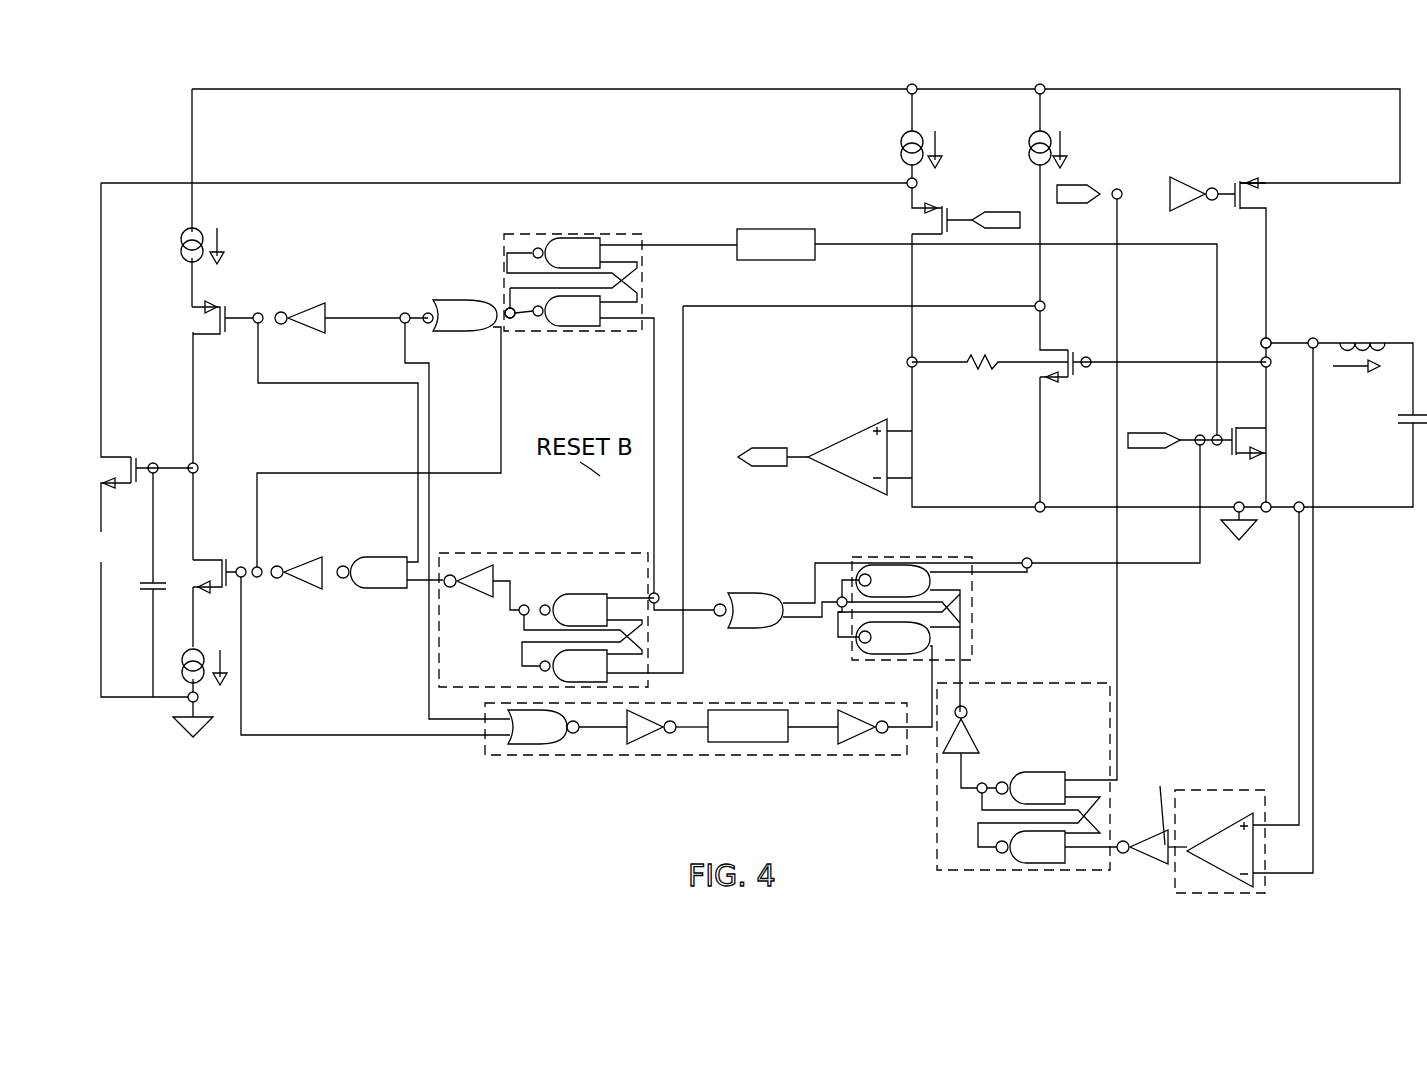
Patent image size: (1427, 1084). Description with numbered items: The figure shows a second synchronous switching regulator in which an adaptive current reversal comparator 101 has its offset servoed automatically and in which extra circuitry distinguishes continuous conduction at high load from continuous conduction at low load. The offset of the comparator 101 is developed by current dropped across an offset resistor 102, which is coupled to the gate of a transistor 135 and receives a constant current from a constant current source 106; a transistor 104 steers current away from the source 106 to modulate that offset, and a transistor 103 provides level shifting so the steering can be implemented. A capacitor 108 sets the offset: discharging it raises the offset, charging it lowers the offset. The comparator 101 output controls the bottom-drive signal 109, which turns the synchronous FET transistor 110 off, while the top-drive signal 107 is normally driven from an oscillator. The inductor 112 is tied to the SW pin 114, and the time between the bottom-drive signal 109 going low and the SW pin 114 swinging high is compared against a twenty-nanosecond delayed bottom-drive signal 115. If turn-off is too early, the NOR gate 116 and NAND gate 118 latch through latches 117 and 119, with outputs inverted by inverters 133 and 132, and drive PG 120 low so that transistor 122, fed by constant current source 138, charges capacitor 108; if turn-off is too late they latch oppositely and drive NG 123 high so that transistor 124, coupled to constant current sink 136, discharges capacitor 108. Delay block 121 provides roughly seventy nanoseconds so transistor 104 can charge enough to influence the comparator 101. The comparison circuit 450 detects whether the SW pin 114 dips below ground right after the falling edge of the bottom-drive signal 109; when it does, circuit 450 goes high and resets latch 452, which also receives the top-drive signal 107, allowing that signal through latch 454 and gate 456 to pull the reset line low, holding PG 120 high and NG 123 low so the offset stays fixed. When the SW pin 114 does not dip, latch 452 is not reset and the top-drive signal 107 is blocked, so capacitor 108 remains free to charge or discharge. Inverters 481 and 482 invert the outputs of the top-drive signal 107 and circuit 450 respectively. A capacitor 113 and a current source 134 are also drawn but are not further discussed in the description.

The adaptive current reversal comparator 101 is at (855, 434).
The offset resistor 102 is at (992, 367).
The transistor 103 is at (940, 236).
The transistor 104 is at (112, 455).
The constant current source 106 is at (900, 152).
The TDR 107 is at (1105, 186).
The capacitor 108 is at (138, 582).
The BDR 109 is at (1137, 432).
The synchronous FET transistor 110 is at (1240, 435).
The inductor 112 is at (1362, 338).
The capacitor 113 is at (1406, 426).
The SW pin 114 is at (1290, 326).
The delayed BDR signal 115 is at (778, 229).
The NOR gate 116 is at (468, 300).
The latch 117 is at (576, 234).
The NAND gate 118 is at (392, 556).
The latch 119 is at (566, 552).
The PG 120 is at (258, 312).
The delay block 121 is at (608, 755).
The transistor 122 is at (200, 322).
The NG 123 is at (260, 565).
The transistor 124 is at (225, 556).
The inverter 132 is at (298, 590).
The inverter 133 is at (303, 308).
The current source 134 is at (1026, 150).
The transistor 135 is at (1063, 348).
The constant current sink 136 is at (182, 658).
The constant current source 138 is at (190, 238).
The NICMP comparison circuit 450 is at (1240, 790).
The latch 452 is at (1085, 683).
The latch 454 is at (982, 650).
The gate 456 is at (770, 594).
The inverter 481 is at (1198, 180).
The inverter 482 is at (1153, 872).